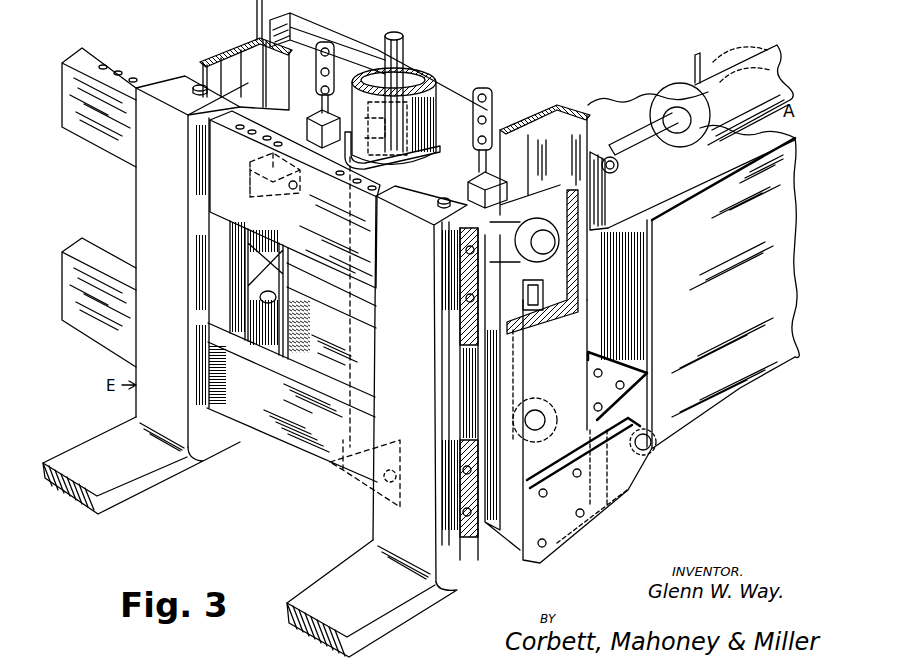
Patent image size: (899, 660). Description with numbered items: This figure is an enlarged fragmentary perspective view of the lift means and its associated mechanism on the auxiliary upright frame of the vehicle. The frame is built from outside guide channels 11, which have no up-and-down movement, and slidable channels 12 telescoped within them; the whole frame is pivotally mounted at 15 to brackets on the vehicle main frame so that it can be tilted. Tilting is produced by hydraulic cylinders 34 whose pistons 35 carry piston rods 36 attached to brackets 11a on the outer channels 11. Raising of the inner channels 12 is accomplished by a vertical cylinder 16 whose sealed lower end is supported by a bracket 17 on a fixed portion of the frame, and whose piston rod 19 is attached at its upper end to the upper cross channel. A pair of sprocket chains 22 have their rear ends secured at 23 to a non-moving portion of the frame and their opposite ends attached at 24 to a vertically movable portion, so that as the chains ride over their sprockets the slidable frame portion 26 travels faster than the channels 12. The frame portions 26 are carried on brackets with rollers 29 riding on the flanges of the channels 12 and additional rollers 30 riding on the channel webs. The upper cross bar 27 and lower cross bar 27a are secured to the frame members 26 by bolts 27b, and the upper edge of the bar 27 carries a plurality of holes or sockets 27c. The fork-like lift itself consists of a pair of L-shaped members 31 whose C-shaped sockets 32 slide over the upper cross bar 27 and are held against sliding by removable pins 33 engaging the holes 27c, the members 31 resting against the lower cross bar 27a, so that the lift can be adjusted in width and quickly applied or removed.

The outside guide channel 11 is at (578, 130).
The bracket 11a is at (603, 184).
The slidable channel 12 is at (245, 47).
The pivot 15 is at (652, 447).
The vertical cylinder 16 is at (412, 80).
The bracket 17 is at (326, 468).
The piston rod 19 is at (395, 45).
The sprocket chain 22 is at (338, 52).
The chain anchorage 23 is at (380, 167).
The chain attachment 24 is at (278, 190).
The slidable frame portion 26 is at (240, 252).
The upper cross bar 27 is at (102, 132).
The lower cross bar 27a is at (108, 260).
The bolt 27b is at (212, 145).
The hole or socket 27c is at (102, 65).
The roller 29 is at (562, 247).
The roller 30 is at (578, 306).
The L-shaped member 31 is at (102, 441).
The C-shaped socket 32 is at (207, 110).
The removable pin 33 is at (199, 85).
The hydraulic cylinder 34 is at (705, 78).
The piston 35 is at (756, 55).
The piston rod 36 is at (643, 137).